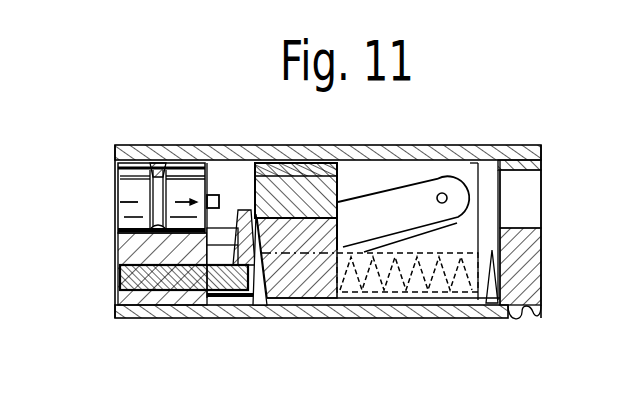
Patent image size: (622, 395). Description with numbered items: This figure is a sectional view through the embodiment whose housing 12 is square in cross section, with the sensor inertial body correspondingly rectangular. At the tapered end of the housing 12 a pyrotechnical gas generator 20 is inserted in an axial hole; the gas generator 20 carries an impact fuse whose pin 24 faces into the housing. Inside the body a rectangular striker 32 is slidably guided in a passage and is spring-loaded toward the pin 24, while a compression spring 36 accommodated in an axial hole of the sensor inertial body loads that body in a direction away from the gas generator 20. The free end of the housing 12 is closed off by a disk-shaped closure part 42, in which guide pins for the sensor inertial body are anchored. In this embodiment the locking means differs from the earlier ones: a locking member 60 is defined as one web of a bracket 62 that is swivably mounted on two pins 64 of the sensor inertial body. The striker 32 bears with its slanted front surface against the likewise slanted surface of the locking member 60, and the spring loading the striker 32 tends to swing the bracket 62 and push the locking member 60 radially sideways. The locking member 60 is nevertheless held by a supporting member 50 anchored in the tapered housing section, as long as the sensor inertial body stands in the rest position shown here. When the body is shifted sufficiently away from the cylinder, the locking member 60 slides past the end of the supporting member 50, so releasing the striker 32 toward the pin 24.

The housing 12 is at (191, 138).
The pyrotechnical gas generator 20 is at (147, 147).
The pin 24 is at (212, 193).
The striker 32 is at (324, 162).
The compression spring 36 is at (419, 300).
The disk-shaped closure part 42 is at (528, 272).
The supporting member 50 is at (170, 318).
The locking member 60 is at (252, 302).
The bracket 62 is at (408, 203).
The pins 64 is at (446, 193).